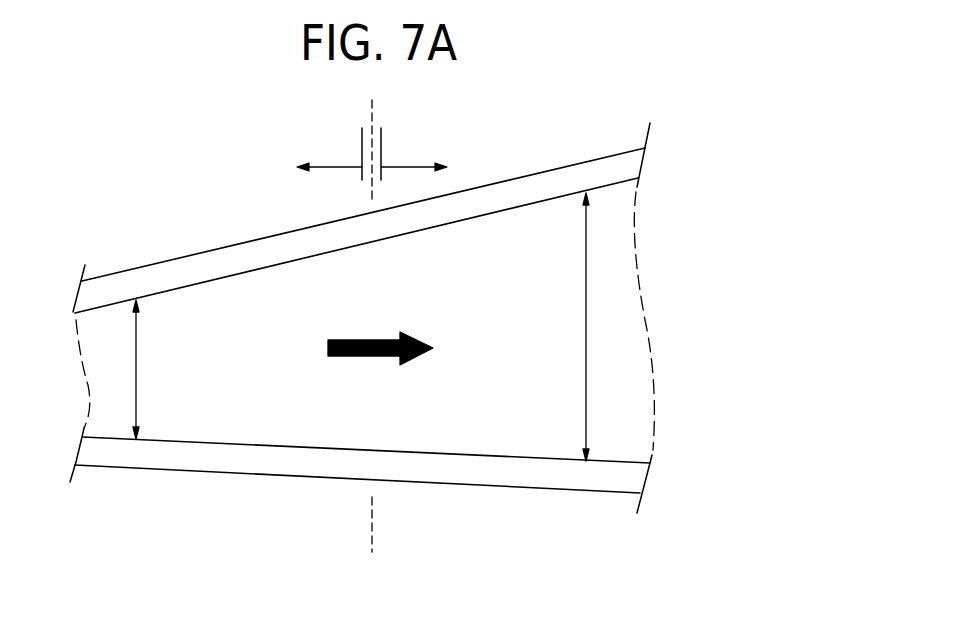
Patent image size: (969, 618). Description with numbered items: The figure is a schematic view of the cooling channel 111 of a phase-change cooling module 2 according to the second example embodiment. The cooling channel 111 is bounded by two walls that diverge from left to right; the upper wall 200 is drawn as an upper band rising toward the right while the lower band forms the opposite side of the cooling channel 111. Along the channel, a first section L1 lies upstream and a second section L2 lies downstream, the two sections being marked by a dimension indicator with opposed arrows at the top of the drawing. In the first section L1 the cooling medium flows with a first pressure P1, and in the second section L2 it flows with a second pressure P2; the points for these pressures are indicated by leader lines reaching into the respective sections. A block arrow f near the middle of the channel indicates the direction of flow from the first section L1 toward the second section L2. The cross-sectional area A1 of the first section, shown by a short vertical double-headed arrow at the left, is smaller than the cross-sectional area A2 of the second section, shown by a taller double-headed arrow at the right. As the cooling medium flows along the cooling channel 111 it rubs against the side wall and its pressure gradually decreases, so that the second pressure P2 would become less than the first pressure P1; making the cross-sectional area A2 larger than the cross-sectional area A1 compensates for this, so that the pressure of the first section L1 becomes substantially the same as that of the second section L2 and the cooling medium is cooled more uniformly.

The phase-change cooling module 2 is at (183, 170).
The window / upper layer 200 is at (525, 190).
The cooling channel 111 is at (183, 483).
The cross-sectional area of the first section A1 is at (136, 372).
The cross-sectional area of the second section A2 is at (586, 328).
The first pressure P1 is at (178, 348).
The second pressure P2 is at (548, 360).
The first section L1 is at (333, 166).
The second section L2 is at (412, 166).
The flow direction arrow f is at (355, 357).